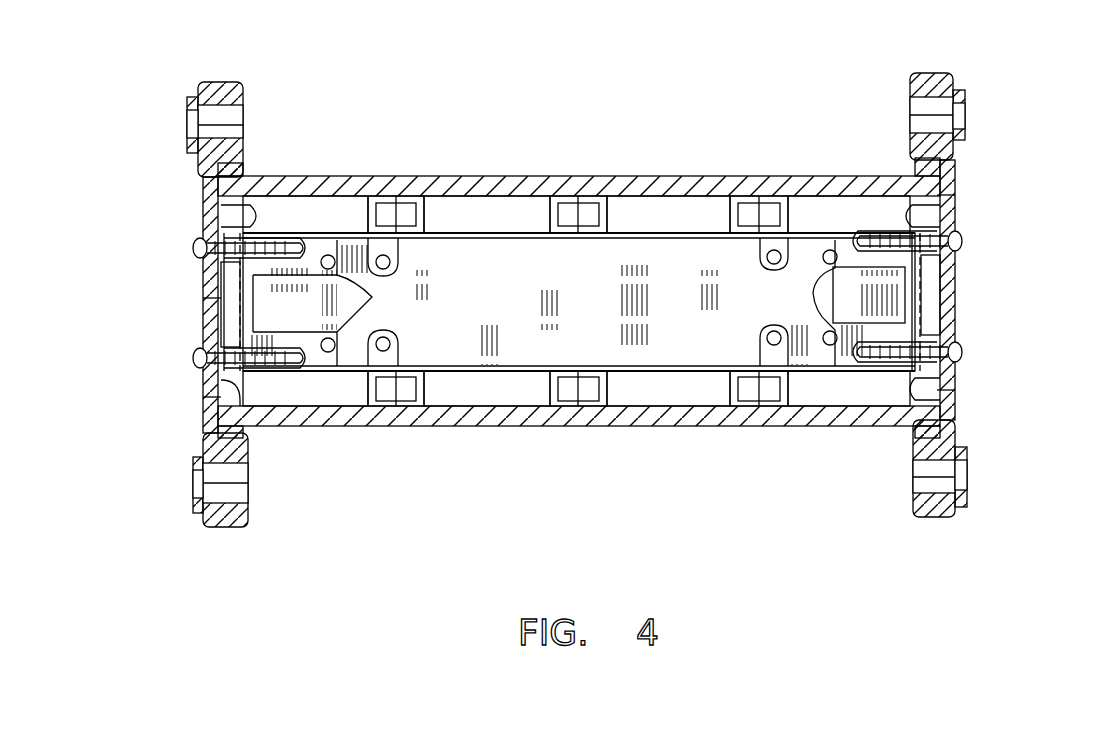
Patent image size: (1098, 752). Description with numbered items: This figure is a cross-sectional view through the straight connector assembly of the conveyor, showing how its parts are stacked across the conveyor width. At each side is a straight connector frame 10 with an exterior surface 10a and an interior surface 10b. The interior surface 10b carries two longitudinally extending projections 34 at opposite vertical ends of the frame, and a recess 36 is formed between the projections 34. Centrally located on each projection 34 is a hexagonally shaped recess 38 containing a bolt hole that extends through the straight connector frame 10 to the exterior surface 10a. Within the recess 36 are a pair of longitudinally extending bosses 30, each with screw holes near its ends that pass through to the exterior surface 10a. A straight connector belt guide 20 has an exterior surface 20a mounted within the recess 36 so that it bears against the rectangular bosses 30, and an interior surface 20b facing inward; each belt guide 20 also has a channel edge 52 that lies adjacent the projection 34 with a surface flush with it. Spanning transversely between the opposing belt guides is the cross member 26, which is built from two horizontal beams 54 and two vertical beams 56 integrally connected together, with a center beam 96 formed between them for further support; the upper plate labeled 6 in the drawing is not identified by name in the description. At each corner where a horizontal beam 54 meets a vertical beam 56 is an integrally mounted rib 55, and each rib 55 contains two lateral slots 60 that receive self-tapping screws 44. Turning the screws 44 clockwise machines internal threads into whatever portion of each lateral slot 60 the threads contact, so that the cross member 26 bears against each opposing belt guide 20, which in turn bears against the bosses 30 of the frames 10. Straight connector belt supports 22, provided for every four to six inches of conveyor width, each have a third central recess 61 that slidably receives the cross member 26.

The straight connector frame 10 is at (204, 171).
The exterior surface 10a is at (200, 298).
The interior surface 10b is at (225, 397).
The projection 34 is at (222, 85).
The hexagonally shaped recess 38 is at (233, 116).
The channel edge 52 is at (253, 168).
The lateral slot 60 is at (310, 242).
The self-tapping screw 44 is at (258, 247).
The straight connector belt support 22 is at (395, 185).
The top plate 6 is at (453, 184).
The horizontal beam 54 is at (648, 196).
The third central recess 61 is at (600, 240).
The straight connector belt guide 20 is at (202, 233).
The exterior surface 20a is at (200, 352).
The interior surface 20b is at (225, 388).
The boss 30 is at (200, 278).
The recess 36 is at (223, 323).
The vertical beam 56 is at (253, 330).
The rib 55 is at (579, 302).
The center beam 96 is at (595, 318).
The cross member 26 is at (477, 372).